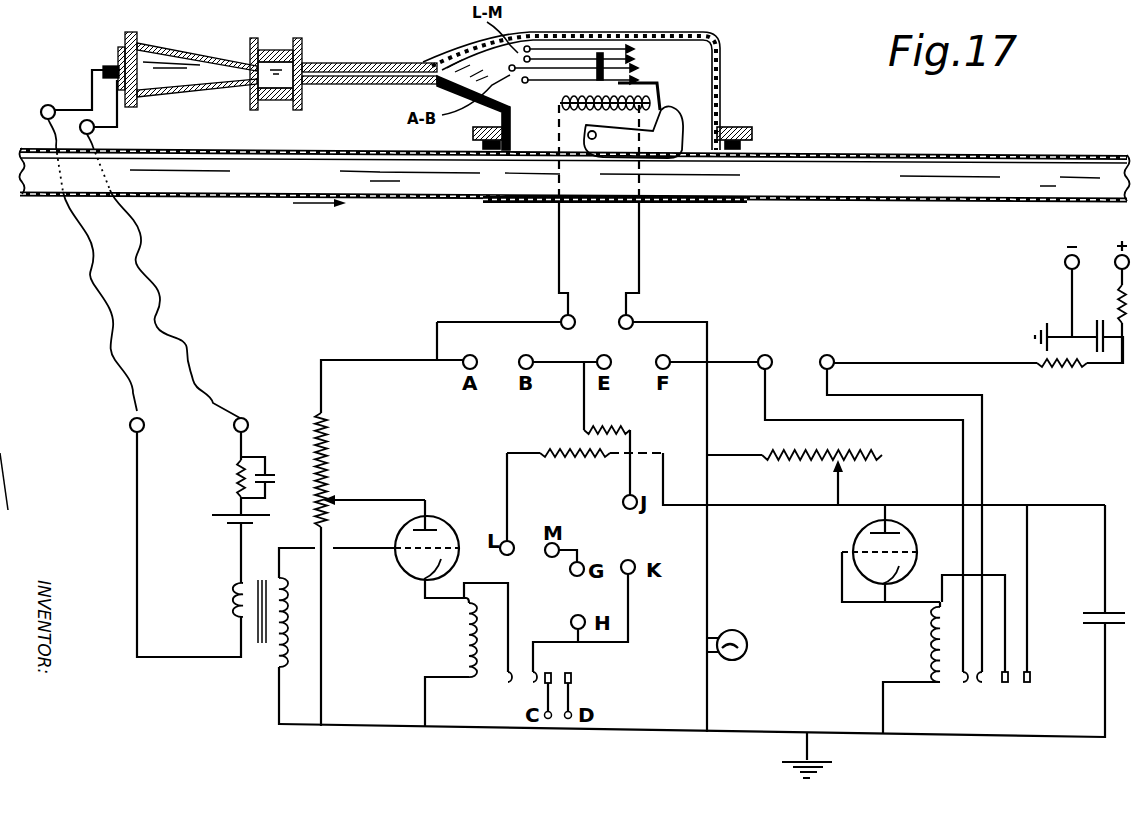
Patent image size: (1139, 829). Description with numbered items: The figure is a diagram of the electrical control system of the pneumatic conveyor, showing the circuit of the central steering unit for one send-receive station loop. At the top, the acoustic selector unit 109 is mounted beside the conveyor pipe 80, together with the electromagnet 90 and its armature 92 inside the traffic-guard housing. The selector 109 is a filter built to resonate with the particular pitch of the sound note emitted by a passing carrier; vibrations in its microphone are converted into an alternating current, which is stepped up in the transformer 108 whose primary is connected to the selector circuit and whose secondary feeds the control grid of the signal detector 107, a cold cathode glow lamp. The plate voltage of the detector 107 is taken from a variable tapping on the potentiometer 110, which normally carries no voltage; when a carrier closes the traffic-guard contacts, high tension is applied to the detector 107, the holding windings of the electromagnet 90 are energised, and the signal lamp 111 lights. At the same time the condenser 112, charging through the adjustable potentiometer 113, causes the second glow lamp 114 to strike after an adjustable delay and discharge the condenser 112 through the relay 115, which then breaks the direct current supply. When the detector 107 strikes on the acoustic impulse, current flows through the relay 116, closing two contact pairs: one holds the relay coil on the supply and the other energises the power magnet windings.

The pipe 80 is at (998, 167).
The acoustic selector unit 109 is at (218, 50).
The electromagnet 90 is at (651, 107).
The armature 92 is at (677, 123).
The potentiometer 110 is at (330, 433).
The signal detector 107 is at (452, 527).
The relay 116 is at (462, 661).
The step-up transformer 108 is at (261, 663).
The signal lamp 111 is at (746, 647).
The potentiometer 113 is at (794, 467).
The glow lamp 114 is at (906, 542).
The relay 115 is at (945, 654).
The condenser 112 is at (1097, 621).